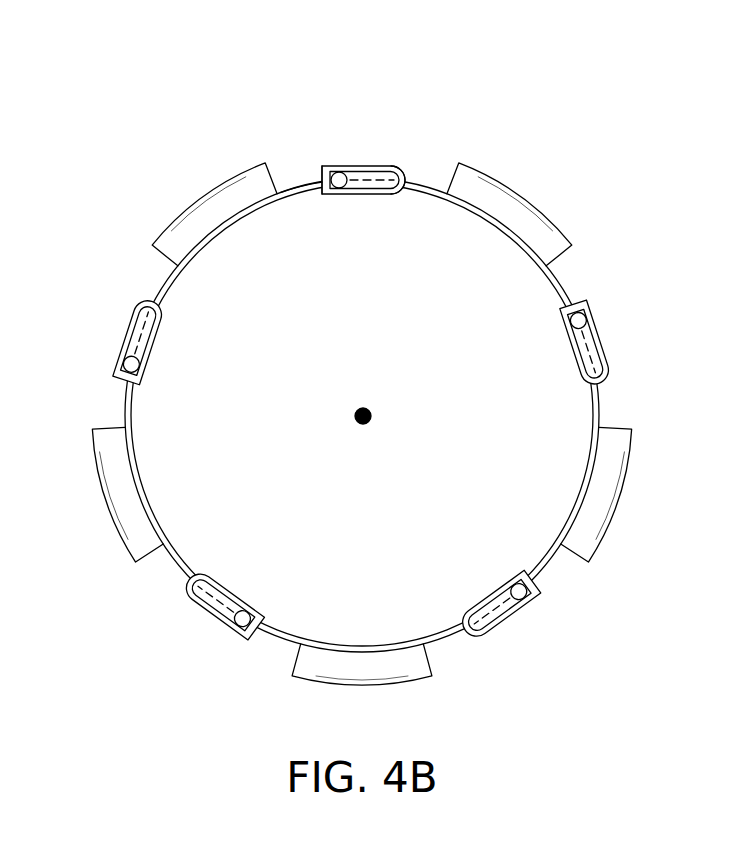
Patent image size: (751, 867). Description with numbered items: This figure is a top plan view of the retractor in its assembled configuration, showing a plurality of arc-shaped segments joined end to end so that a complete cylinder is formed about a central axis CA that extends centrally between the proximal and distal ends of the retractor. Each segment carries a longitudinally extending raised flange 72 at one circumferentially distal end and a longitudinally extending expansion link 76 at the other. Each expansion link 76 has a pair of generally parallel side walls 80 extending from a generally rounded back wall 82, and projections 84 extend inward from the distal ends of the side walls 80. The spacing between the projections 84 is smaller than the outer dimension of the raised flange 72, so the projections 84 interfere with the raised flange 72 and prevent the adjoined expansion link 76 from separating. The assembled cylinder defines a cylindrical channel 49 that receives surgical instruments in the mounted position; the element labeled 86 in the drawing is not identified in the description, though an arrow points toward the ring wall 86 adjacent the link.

The cylindrical channel 49 is at (617, 403).
The raised flange 72 is at (383, 171).
The expansion link 76 is at (390, 146).
The side walls 80 is at (361, 165).
The rounded back wall 82 is at (401, 174).
The projections 84 is at (323, 175).
The ring segment 86 is at (301, 166).
The central axis CA is at (370, 419).